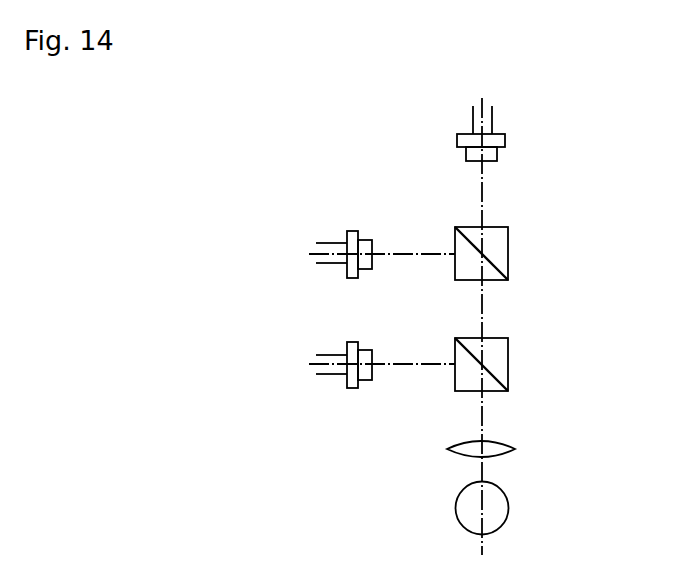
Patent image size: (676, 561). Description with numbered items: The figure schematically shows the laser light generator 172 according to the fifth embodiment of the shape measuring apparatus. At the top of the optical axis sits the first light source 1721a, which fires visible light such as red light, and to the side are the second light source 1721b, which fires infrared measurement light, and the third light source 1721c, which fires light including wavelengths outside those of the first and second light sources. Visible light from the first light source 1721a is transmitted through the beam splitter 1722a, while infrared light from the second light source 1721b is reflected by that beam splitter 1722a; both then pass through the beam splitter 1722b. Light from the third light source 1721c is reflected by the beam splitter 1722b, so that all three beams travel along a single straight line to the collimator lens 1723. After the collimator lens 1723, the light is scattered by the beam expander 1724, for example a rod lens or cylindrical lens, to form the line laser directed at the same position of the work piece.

The laser light generator 172 is at (322, 123).
The first light source 1721a is at (506, 139).
The second light source 1721b is at (350, 229).
The third light source 1721c is at (350, 340).
The beam splitter 1722a is at (508, 244).
The beam splitter 1722b is at (508, 355).
The collimator lens 1723 is at (515, 449).
The beam expander 1724 is at (508, 508).